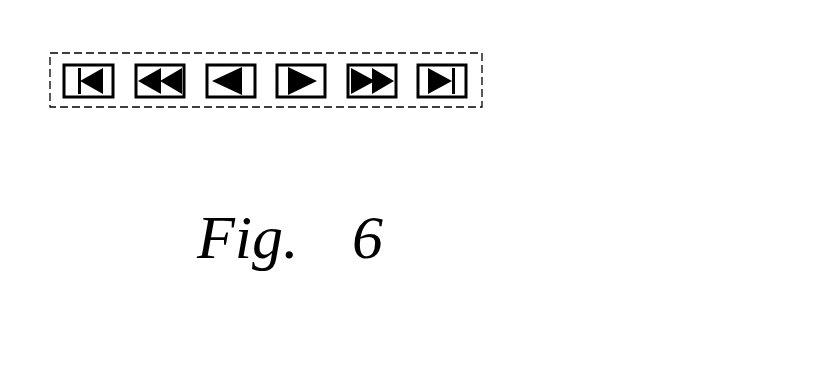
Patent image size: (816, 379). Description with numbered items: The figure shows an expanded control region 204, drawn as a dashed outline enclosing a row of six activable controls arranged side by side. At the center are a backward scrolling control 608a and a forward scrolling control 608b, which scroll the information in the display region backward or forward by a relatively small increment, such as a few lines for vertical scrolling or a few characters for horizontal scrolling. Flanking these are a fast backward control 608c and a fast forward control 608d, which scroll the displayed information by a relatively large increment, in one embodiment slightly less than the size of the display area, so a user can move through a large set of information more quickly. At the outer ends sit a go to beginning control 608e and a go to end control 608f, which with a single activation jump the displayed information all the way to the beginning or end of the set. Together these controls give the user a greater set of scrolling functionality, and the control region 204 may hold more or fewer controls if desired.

The control region 204 is at (472, 53).
The backward scrolling control 608a is at (228, 97).
The forward scrolling control 608b is at (298, 97).
The fast backward control 608c is at (157, 97).
The fast forward control 608d is at (367, 97).
The go to beginning control 608e is at (90, 97).
The go to end control 608f is at (437, 97).